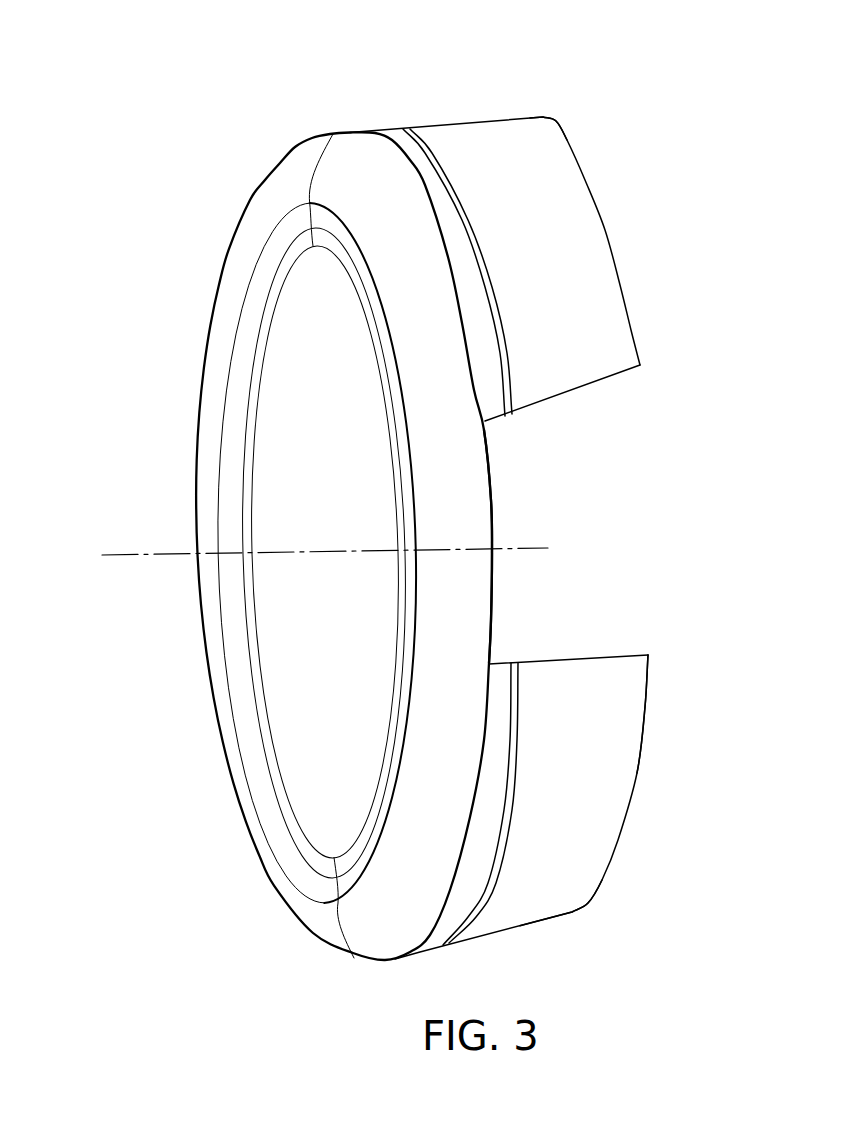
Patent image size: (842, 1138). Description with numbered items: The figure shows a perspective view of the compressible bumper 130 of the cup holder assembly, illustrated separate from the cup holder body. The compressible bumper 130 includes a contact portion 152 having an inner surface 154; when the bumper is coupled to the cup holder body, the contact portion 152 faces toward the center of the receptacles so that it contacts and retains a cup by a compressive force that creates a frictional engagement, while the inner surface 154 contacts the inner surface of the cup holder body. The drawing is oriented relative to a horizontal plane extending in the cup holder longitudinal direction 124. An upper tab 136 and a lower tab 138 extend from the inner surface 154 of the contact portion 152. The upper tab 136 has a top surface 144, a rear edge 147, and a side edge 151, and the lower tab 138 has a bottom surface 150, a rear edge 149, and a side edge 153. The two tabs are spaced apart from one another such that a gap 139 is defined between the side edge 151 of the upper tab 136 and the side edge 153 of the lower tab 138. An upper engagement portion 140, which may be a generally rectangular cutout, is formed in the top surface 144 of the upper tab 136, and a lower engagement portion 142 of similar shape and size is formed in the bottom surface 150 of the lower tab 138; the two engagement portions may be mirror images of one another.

The compressible bumper 130 is at (140, 371).
The upper engagement portion 140 is at (400, 112).
The contact portion 152 is at (262, 633).
The inner surface 154 is at (496, 609).
The cup holder longitudinal direction 124 is at (529, 546).
The upper tab 136 is at (605, 243).
The rear edge 147 is at (585, 155).
The side edge 151 is at (590, 386).
The top surface 144 is at (511, 117).
The lower tab 138 is at (619, 823).
The side edge 153 is at (594, 657).
The rear edge 149 is at (648, 679).
The bottom surface 150 is at (566, 908).
The lower engagement portion 142 is at (482, 934).
The gap 139 is at (680, 538).